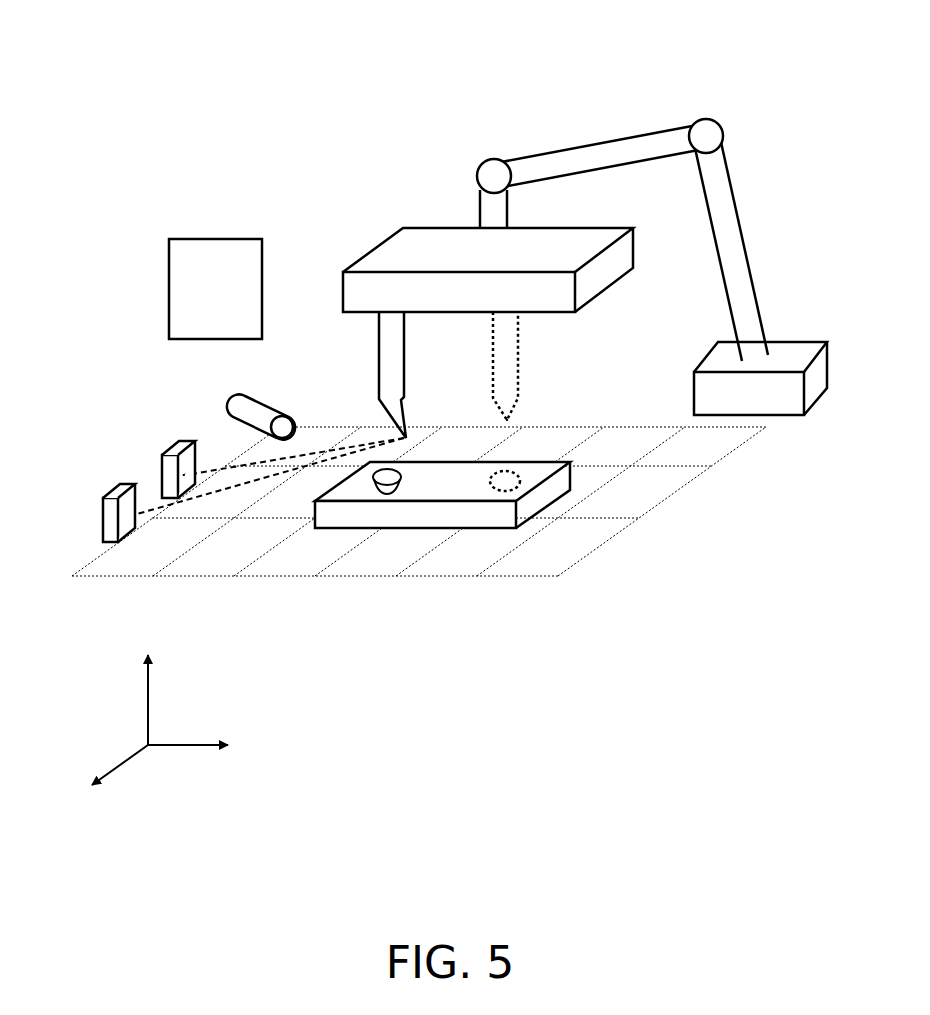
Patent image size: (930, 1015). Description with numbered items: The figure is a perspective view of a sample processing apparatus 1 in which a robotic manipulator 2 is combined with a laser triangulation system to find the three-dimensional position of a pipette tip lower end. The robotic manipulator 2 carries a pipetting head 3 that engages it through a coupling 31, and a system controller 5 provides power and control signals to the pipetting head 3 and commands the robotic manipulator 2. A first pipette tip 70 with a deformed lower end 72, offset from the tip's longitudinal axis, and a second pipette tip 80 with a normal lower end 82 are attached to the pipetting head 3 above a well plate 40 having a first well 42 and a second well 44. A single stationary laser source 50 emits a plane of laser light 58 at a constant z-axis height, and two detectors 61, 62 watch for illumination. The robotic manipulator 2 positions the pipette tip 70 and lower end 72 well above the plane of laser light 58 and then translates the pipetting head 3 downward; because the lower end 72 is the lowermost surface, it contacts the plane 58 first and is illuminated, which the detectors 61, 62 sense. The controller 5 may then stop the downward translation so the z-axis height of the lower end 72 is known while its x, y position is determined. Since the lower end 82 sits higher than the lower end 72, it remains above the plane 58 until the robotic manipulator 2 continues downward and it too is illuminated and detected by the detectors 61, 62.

The sample processing apparatus 1 is at (296, 84).
The robotic manipulator 2 is at (725, 197).
The pipetting head 3 is at (484, 244).
The system controller 5 is at (209, 254).
The coupling 31 is at (486, 208).
The well plate 40 is at (502, 542).
The first well 42 is at (388, 494).
The second well 44 is at (515, 491).
The laser source 50 is at (242, 410).
The plane of laser light 58 is at (663, 485).
The first detector 61 is at (170, 466).
The second detector 62 is at (118, 510).
The first pipette tip 70 is at (394, 364).
The deformed lower end 72 is at (413, 435).
The second pipette tip 80 is at (510, 350).
The normal lower end 82 is at (518, 420).